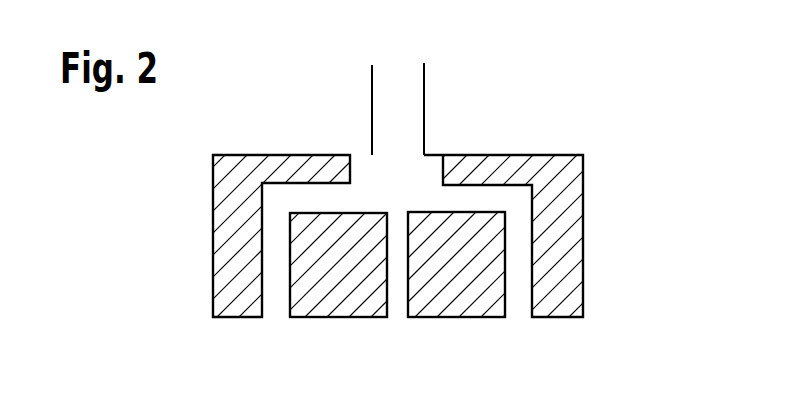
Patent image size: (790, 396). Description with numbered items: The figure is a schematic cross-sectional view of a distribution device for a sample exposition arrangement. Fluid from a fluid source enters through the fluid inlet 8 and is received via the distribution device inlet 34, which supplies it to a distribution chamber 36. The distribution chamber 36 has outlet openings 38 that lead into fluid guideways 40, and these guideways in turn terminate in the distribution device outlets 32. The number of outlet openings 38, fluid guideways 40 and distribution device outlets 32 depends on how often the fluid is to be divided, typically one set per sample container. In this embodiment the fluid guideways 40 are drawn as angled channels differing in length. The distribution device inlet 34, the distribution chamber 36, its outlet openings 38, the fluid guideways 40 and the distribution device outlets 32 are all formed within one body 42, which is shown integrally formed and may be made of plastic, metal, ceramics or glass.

The fluid inlet 8 is at (424, 87).
The distribution device outlets 32 is at (280, 320).
The distribution device inlet 34 is at (406, 157).
The distribution chamber 36 is at (400, 194).
The outlet openings 38 is at (345, 200).
The fluid guideways 40 is at (267, 238).
The body 42 is at (585, 257).